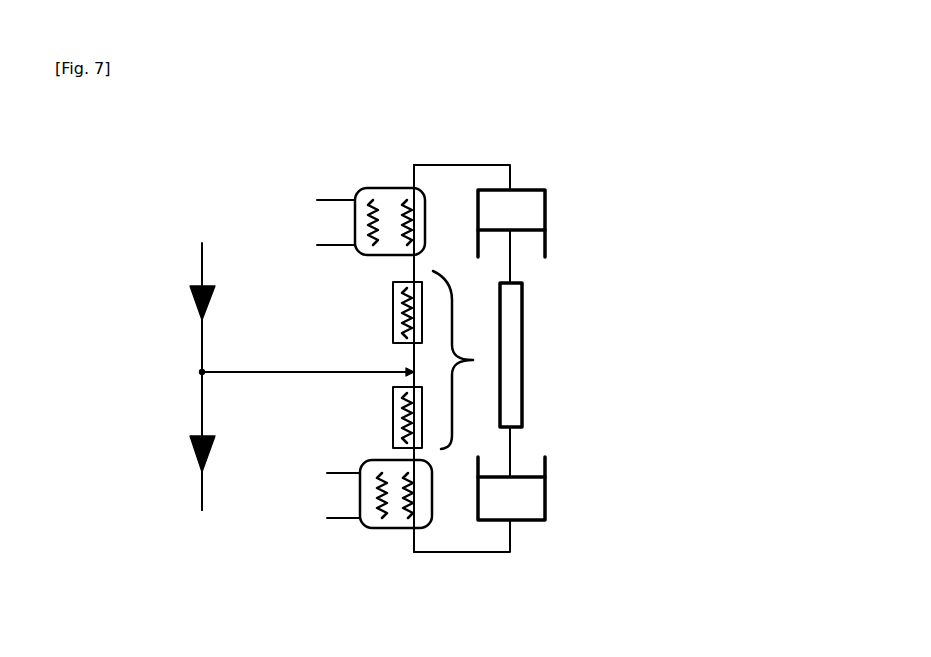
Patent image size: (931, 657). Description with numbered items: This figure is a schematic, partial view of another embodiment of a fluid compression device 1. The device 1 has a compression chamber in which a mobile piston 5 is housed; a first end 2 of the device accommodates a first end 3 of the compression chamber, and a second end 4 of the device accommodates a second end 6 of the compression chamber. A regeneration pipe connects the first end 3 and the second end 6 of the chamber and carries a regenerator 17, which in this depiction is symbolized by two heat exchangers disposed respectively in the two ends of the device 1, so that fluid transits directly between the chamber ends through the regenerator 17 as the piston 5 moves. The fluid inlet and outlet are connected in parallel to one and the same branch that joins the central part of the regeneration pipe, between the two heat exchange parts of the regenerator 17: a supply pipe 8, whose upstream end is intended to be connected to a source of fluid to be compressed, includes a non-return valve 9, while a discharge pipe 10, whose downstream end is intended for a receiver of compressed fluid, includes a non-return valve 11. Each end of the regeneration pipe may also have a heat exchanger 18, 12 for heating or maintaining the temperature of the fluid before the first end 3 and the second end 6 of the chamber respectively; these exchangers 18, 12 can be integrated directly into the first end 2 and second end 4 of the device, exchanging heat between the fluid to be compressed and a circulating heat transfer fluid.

The fluid compression device 1 is at (707, 424).
The first end 2 is at (503, 560).
The first end of the compression chamber 3 is at (513, 493).
The second end 4 is at (481, 163).
The mobile piston 5 is at (522, 377).
The second end of the compression chamber 6 is at (533, 218).
The supply pipe 8 is at (202, 480).
The non-return valve 9 is at (217, 462).
The discharge pipe 10 is at (202, 335).
The non-return valve 11 is at (183, 299).
The heat exchanger 12 is at (367, 181).
The regenerator 17 is at (480, 363).
The heat exchanger 18 is at (386, 539).